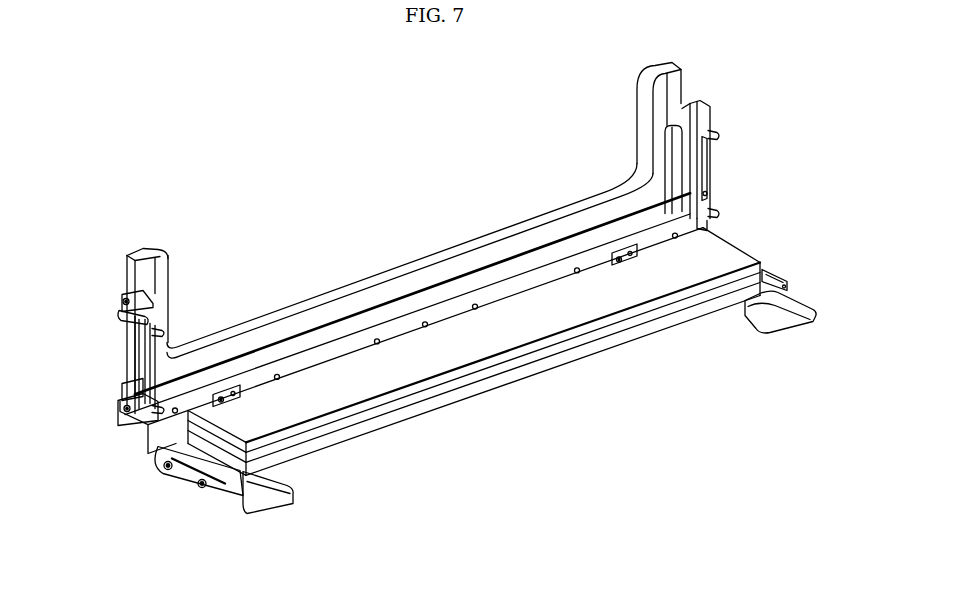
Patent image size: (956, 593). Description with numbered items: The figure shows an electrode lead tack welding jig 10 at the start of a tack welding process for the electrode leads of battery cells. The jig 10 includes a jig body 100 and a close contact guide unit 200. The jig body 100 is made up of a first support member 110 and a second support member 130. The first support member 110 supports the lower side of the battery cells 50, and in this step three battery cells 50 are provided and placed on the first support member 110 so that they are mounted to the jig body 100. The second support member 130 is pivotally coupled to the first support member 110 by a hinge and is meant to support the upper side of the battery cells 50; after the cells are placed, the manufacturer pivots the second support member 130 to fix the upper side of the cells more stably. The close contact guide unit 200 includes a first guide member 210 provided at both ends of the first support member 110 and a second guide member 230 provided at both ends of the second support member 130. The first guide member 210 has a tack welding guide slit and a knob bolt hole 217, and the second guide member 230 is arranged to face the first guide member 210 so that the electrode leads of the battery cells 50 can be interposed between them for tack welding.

The electrode lead tack welding jig 10 is at (263, 209).
The battery cell 50 is at (517, 388).
The jig body 100 is at (334, 263).
The first support member 110 is at (776, 323).
The second support member 130 is at (420, 256).
The close contact guide unit 200 is at (735, 157).
The first guide member 210 is at (192, 498).
The knob bolt hole 217 is at (247, 500).
The second guide member 230 is at (118, 354).